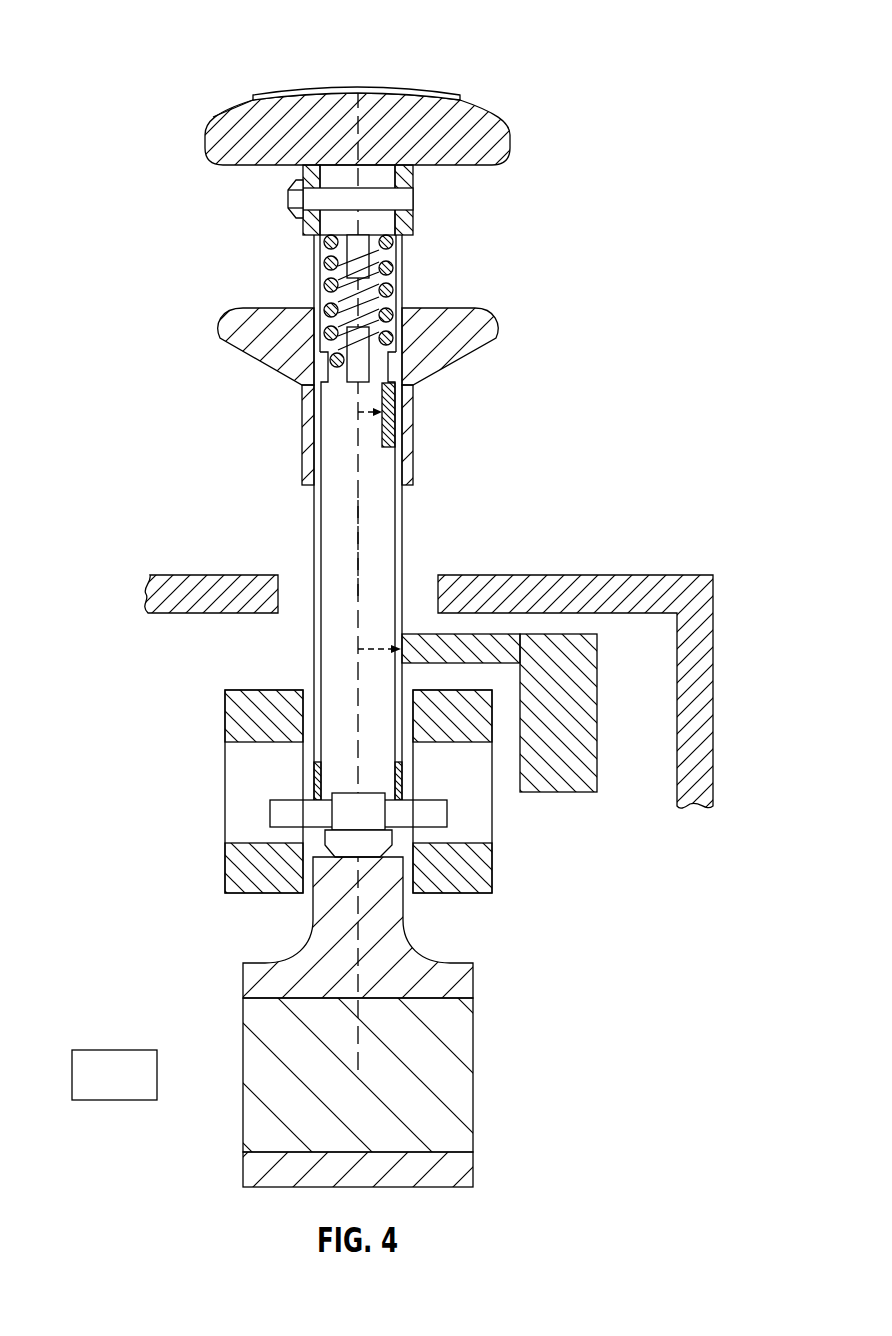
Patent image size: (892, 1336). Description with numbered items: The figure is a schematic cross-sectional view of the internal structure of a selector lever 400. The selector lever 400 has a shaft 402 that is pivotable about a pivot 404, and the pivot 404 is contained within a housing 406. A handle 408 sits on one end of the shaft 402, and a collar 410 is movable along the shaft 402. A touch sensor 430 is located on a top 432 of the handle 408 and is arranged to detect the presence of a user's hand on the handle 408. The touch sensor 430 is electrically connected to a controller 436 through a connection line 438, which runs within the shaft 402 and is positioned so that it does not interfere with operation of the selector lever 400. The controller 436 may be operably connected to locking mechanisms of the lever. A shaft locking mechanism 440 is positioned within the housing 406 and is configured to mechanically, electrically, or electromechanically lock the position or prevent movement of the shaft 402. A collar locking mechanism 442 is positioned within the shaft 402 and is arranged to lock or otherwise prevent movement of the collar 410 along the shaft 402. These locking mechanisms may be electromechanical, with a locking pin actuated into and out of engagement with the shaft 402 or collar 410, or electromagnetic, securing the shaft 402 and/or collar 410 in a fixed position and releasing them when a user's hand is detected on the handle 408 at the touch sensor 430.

The selector lever 400 is at (614, 50).
The shaft 402 is at (396, 552).
The pivot 404 is at (473, 1070).
The housing 406 is at (150, 578).
The handle 408 is at (500, 118).
The collar 410 is at (218, 330).
The touch sensor 430 is at (310, 87).
The top 432 is at (238, 96).
The controller 436 is at (243, 1075).
The connection line 438 is at (358, 550).
The shaft locking mechanism 440 is at (556, 782).
The collar locking mechanism 442 is at (386, 405).